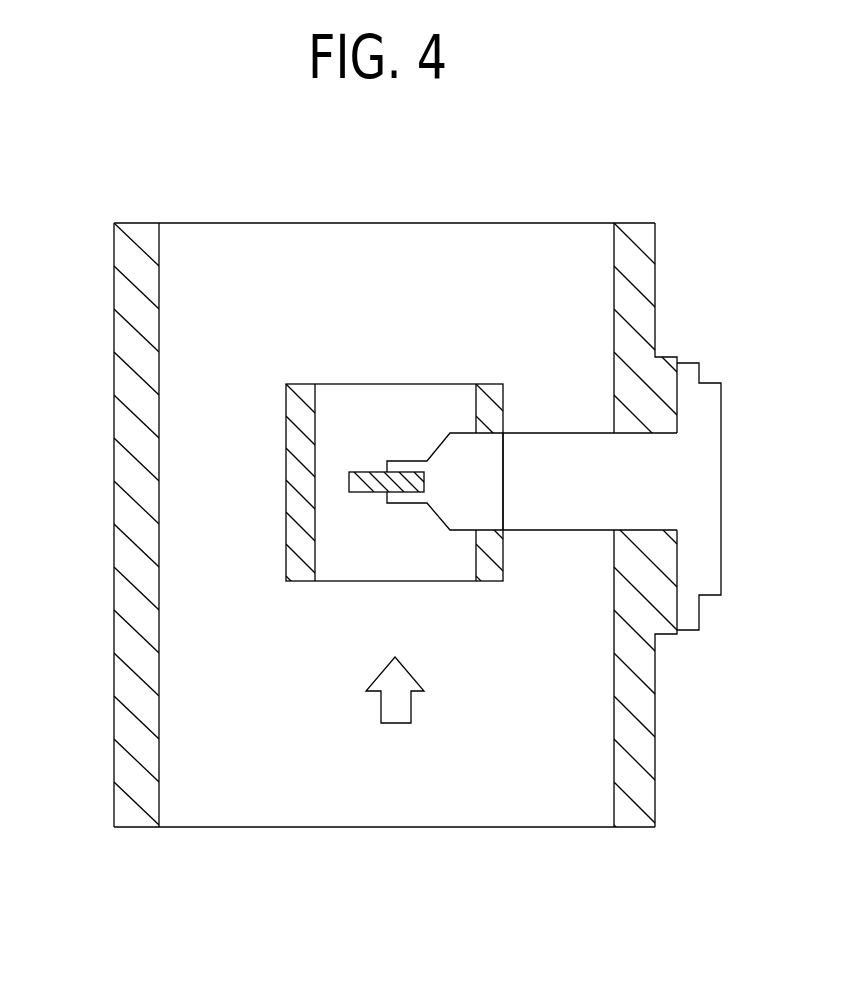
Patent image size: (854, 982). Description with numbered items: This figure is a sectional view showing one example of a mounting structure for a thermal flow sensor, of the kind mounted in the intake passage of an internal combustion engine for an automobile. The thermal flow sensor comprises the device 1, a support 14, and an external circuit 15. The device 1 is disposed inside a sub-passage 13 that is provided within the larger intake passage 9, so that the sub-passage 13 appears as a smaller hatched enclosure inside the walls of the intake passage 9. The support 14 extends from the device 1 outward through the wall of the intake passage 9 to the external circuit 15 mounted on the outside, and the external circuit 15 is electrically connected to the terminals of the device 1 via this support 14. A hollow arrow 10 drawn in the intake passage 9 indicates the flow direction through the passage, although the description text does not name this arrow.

The thermal flow sensor device 1 is at (343, 482).
The intake passage 9 is at (123, 372).
The gas flow direction 10 is at (412, 708).
The sub-passage 13 is at (298, 445).
The support 14 is at (545, 455).
The external circuit 15 is at (706, 480).